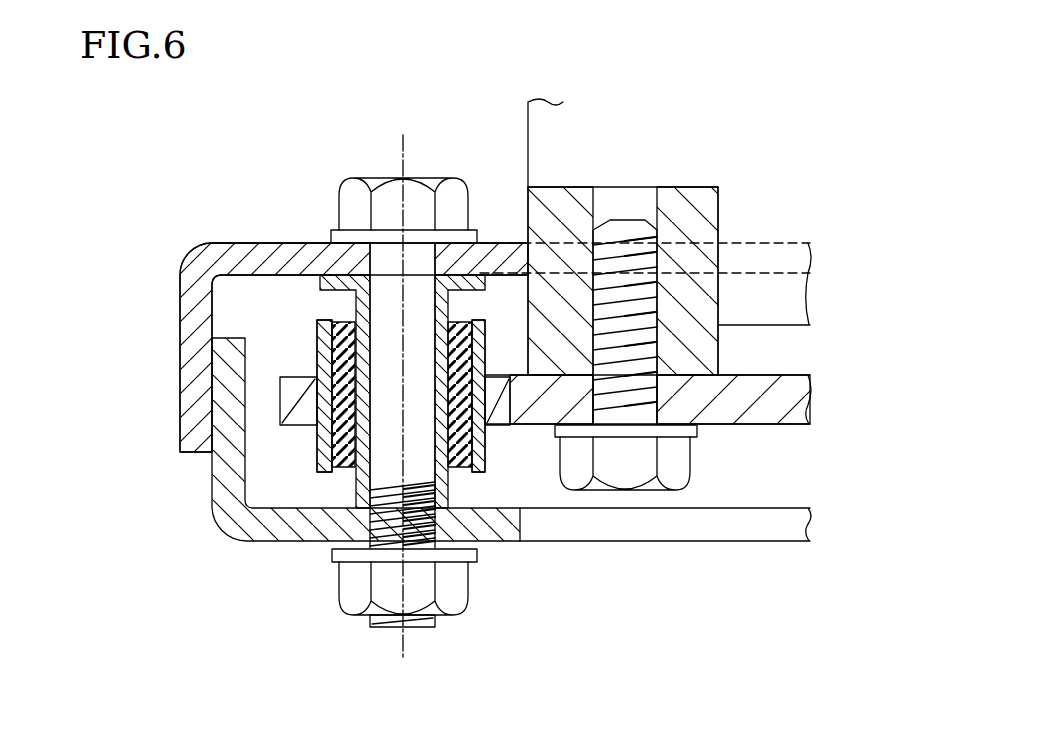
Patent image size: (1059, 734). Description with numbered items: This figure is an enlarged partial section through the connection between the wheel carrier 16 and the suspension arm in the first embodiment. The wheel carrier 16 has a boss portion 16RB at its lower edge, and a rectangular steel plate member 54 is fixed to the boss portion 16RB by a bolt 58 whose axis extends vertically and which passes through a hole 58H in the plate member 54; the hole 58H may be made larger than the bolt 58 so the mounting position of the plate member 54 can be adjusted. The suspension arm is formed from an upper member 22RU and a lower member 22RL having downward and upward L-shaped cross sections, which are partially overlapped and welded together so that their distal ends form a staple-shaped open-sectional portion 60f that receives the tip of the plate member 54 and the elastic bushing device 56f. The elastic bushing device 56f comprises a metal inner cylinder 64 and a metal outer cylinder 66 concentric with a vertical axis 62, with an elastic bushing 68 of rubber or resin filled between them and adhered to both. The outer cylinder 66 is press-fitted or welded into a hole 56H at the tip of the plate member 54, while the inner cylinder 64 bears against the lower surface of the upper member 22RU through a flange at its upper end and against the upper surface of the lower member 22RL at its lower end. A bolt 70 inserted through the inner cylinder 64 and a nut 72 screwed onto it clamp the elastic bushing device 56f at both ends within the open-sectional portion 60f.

The wheel carrier 16 is at (526, 138).
The boss portion 16RB is at (718, 209).
The upper member 22RU is at (215, 242).
The lower member 22RL is at (502, 539).
The plate member 54 is at (755, 416).
The elastic bushing device 56f is at (316, 329).
The hole 56H is at (481, 438).
The bolt 58 is at (638, 478).
The hole 58H is at (660, 375).
The open-sectional portion 60f is at (302, 243).
The axis 62 is at (400, 150).
The inner cylinder 64 is at (355, 490).
The outer cylinder 66 is at (316, 353).
The elastic bushing 68 is at (332, 445).
The bolt 70 is at (453, 187).
The nut 72 is at (418, 598).